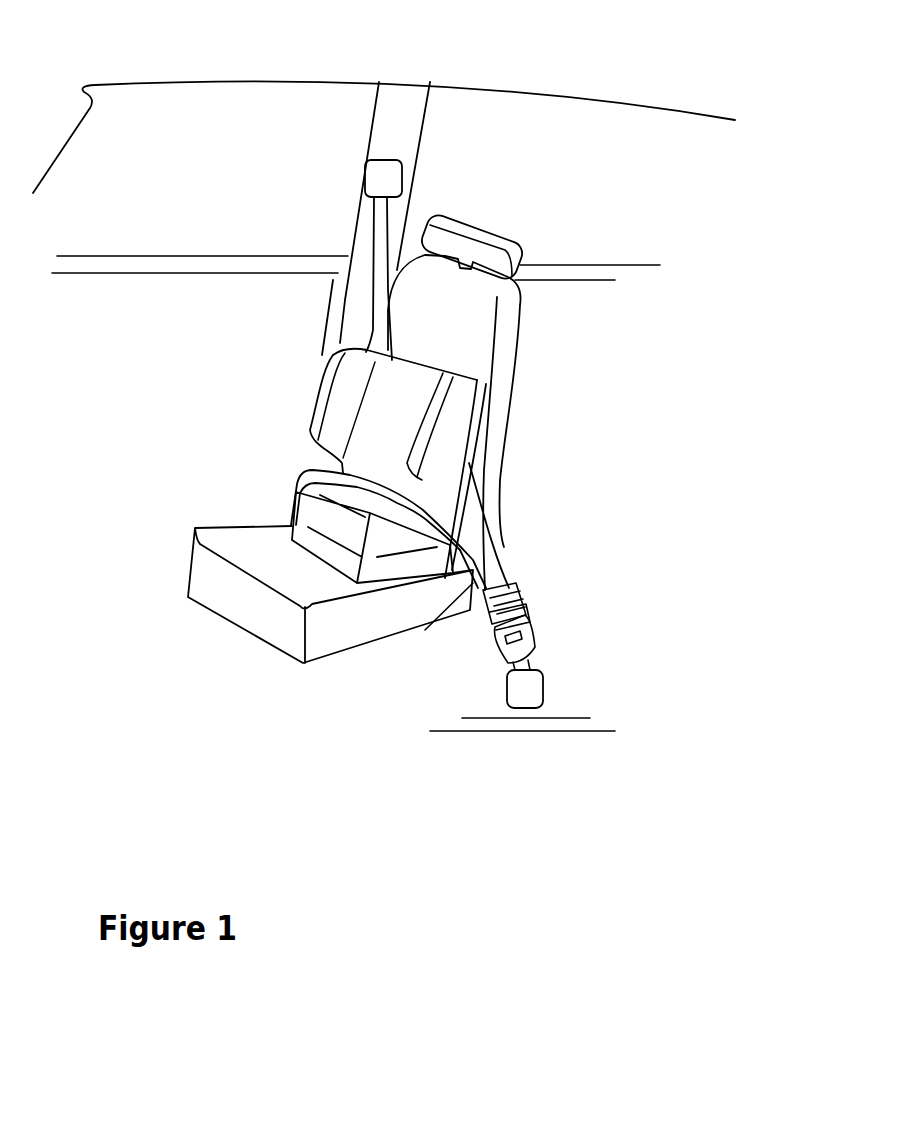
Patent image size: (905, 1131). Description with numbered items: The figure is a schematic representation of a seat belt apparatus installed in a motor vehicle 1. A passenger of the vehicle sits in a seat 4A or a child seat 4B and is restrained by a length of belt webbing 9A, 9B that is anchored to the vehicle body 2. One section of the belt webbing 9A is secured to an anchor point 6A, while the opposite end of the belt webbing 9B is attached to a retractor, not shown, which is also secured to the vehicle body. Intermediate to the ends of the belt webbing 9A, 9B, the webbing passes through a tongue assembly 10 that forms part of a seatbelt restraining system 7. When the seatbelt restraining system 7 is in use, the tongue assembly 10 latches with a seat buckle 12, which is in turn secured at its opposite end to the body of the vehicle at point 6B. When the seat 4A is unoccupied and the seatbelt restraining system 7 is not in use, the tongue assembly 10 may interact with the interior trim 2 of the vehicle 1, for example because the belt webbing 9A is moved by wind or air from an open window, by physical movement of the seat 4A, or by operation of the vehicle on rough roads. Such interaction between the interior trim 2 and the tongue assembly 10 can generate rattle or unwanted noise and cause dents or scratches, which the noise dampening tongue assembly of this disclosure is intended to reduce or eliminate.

The motor vehicle 1 is at (153, 82).
The vehicle body 2 is at (408, 113).
The seat 4A is at (223, 597).
The child seat 4B is at (393, 533).
The anchor point 6A is at (385, 175).
The point 6B is at (533, 695).
The seatbelt restraining system 7 is at (640, 457).
The belt webbing 9A is at (372, 262).
The belt webbing 9B is at (462, 547).
The tongue assembly 10 is at (510, 593).
The seat buckle 12 is at (523, 648).